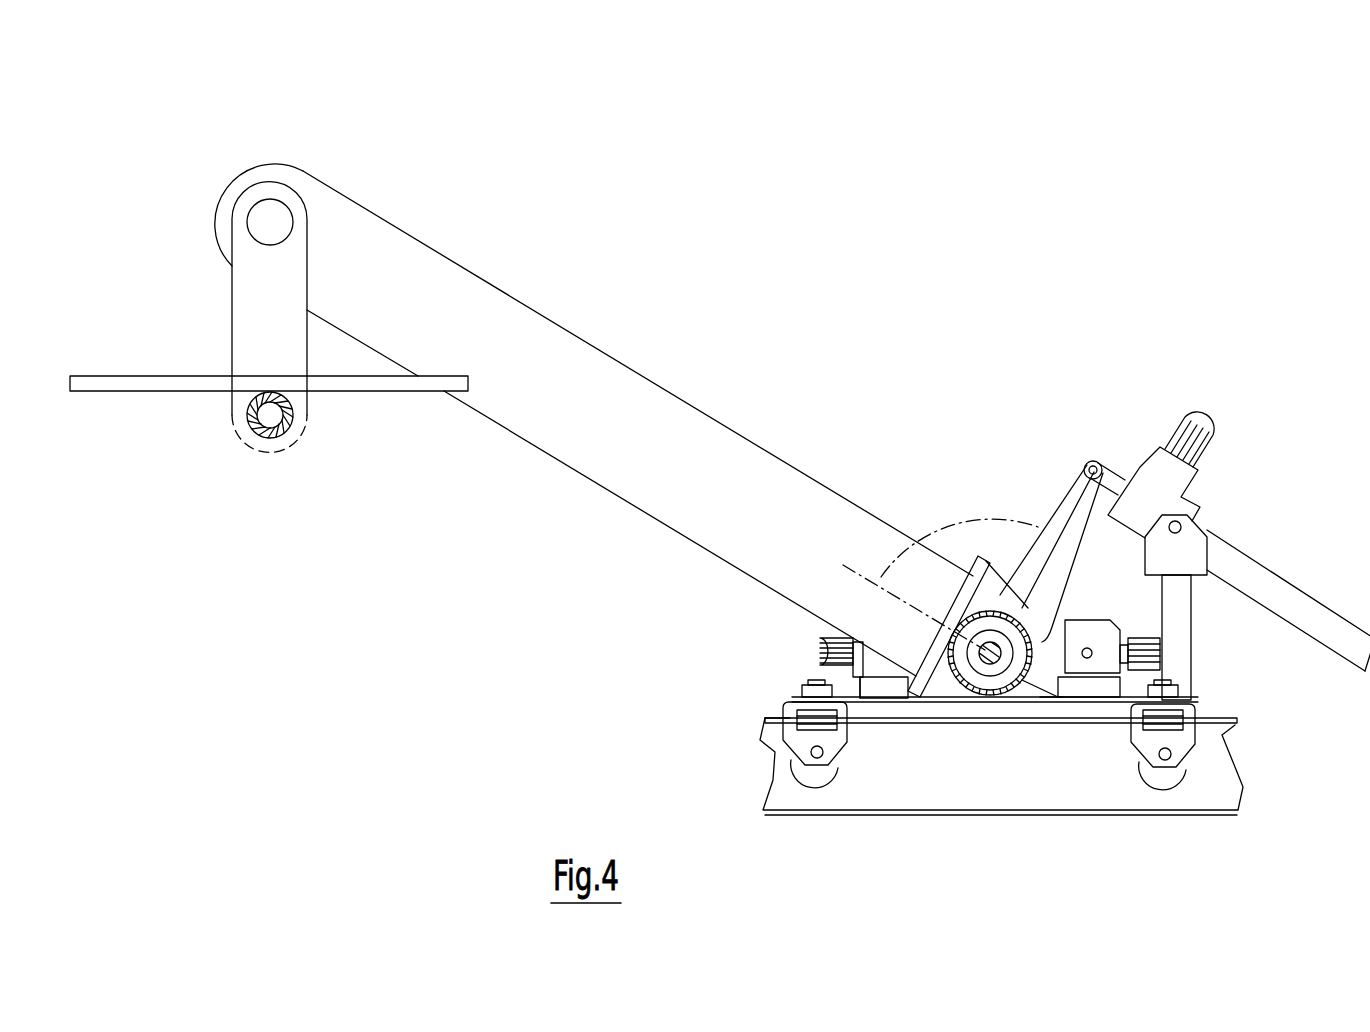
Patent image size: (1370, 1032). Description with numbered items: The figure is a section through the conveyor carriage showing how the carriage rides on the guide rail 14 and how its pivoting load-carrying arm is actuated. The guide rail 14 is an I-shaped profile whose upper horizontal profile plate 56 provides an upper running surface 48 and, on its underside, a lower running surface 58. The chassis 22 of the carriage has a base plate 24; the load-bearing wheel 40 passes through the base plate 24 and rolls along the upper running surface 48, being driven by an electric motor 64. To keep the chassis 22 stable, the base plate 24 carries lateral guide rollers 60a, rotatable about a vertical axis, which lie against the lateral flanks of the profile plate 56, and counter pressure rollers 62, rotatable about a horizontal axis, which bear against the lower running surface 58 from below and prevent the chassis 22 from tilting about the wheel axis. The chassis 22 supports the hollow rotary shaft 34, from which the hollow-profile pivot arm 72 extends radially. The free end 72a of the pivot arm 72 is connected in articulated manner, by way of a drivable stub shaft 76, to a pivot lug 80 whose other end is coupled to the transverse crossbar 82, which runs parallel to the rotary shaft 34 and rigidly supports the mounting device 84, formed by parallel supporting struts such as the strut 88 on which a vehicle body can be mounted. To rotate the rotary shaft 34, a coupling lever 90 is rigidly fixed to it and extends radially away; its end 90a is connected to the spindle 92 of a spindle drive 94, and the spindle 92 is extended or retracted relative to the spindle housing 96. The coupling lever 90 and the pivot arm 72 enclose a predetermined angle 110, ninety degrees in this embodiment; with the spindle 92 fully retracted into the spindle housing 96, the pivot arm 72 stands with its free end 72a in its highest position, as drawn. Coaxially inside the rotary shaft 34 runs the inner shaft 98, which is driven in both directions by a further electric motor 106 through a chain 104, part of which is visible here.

The guide rail 14 is at (1220, 800).
The chassis 22 is at (1212, 643).
The base plate 24 is at (867, 697).
The rotary shaft 34 is at (1060, 697).
The wheel 40 is at (1002, 700).
The upper running surface 48 is at (1215, 712).
The upper horizontal profile plate 56 is at (773, 717).
The lower running surface 58 is at (1223, 733).
The lateral guide rollers 60a is at (813, 719).
The counter pressure rollers 62 is at (827, 772).
The electric motor 64 is at (810, 658).
The pivot arm 72 is at (613, 380).
The free end of pivot arm 72a is at (257, 178).
The stub shaft 76 is at (270, 223).
The pivot lug 80 is at (243, 315).
The transverse crossbar 82 is at (290, 427).
The mounting device 84 is at (188, 438).
The supporting strut 88 is at (132, 385).
The coupling lever 90 is at (1068, 498).
The end of coupling lever 90a is at (1085, 462).
The spindle 92 is at (1140, 455).
The spindle drive 94 is at (1230, 466).
The spindle housing 96 is at (1250, 575).
The inner shaft 98 is at (1000, 660).
The chain 104 is at (1055, 607).
The electric motor 106 is at (1148, 653).
The angle 110 is at (928, 533).